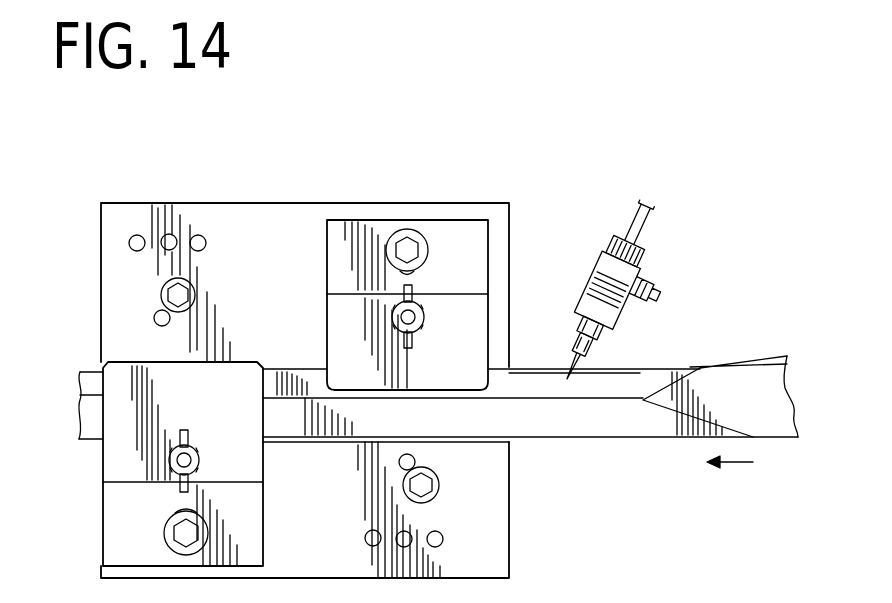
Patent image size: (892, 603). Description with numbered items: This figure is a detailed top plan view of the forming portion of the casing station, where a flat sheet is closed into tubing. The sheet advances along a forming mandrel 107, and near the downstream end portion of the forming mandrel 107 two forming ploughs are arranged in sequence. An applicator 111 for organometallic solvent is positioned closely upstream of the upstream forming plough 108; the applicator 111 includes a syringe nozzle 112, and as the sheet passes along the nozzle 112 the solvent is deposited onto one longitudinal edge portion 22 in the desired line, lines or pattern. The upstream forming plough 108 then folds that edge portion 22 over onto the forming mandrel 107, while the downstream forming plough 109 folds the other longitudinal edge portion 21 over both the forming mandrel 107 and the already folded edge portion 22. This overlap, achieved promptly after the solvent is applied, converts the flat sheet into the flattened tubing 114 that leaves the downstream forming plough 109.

The longitudinal edge portion 21 is at (546, 416).
The longitudinal edge portion 22 is at (612, 375).
The forming mandrel 107 is at (748, 380).
The upstream forming plough 108 is at (478, 325).
The downstream forming plough 109 is at (257, 462).
The applicator 111 is at (627, 273).
The syringe nozzle 112 is at (566, 383).
The flattened tubing 114 is at (97, 418).